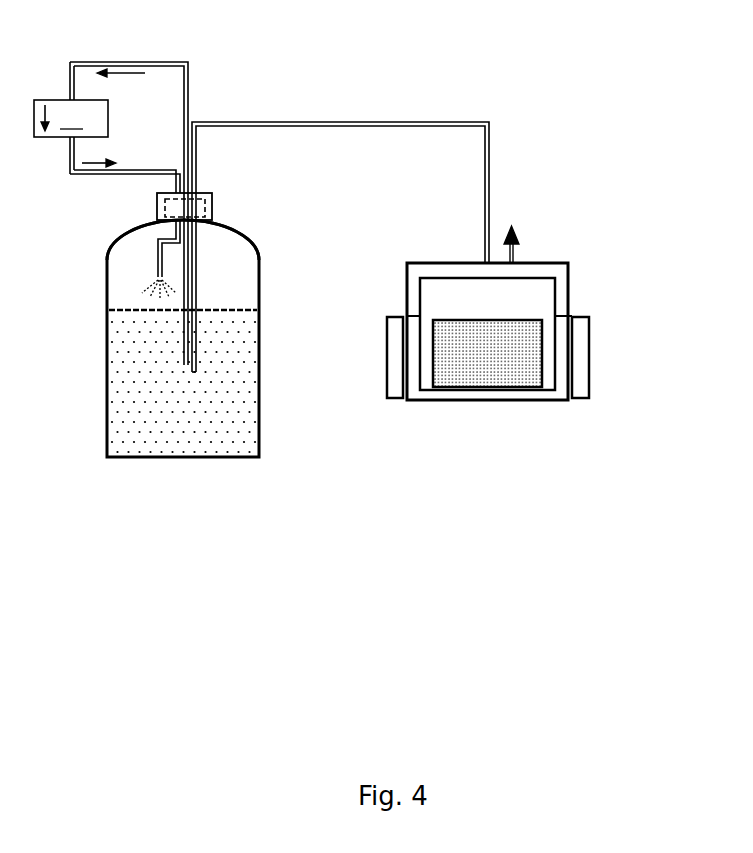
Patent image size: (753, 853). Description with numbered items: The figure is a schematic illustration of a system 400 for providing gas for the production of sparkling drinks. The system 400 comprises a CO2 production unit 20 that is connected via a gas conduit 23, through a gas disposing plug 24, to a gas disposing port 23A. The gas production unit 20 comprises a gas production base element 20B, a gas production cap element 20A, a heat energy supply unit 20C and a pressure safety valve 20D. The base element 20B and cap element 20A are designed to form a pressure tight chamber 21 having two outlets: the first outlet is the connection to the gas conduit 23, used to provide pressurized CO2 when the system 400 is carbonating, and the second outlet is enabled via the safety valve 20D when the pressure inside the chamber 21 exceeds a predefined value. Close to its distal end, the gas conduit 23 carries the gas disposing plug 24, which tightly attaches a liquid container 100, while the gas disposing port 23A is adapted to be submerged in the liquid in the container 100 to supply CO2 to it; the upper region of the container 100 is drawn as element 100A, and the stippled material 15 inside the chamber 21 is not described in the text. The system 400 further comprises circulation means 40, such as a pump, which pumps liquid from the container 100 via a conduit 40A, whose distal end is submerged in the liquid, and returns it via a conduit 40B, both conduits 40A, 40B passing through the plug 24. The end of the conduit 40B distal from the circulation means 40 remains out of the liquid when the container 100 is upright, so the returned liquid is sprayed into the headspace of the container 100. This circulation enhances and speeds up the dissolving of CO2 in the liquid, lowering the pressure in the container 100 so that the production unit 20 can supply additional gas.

The system for providing gas 400 is at (670, 476).
The circulation means 40 is at (71, 118).
The conduit 40A is at (134, 56).
The conduit 40B is at (135, 167).
The gas conduit 23 is at (352, 112).
The gas disposing port 23A is at (199, 298).
The gas disposing plug 24 is at (153, 208).
The liquid container 100 is at (93, 465).
The reservoir top 100A is at (112, 250).
The CO2 production unit 20 is at (640, 281).
The gas production cap element 20A is at (559, 275).
The gas production base element 20B is at (413, 326).
The heat energy supply unit 20C is at (394, 366).
The pressure safety valve 20D is at (516, 234).
The pressure tight chamber 21 is at (433, 298).
The sample 15 is at (479, 363).